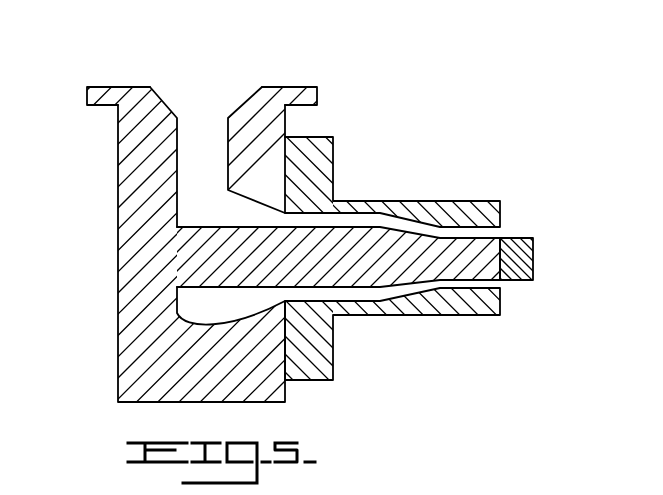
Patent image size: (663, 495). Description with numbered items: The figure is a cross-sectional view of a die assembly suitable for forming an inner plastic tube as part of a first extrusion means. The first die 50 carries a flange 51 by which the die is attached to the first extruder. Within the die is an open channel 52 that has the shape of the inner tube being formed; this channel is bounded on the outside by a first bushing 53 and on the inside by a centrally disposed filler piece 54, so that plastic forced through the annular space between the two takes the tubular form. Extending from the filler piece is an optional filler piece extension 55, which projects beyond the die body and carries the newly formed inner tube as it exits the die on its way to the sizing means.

The first die 50 is at (331, 247).
The flange 51 is at (105, 87).
The open channel 52 is at (498, 284).
The first bushing 53 is at (460, 202).
The filler piece 54 is at (393, 270).
The filler piece extension 55 is at (520, 238).